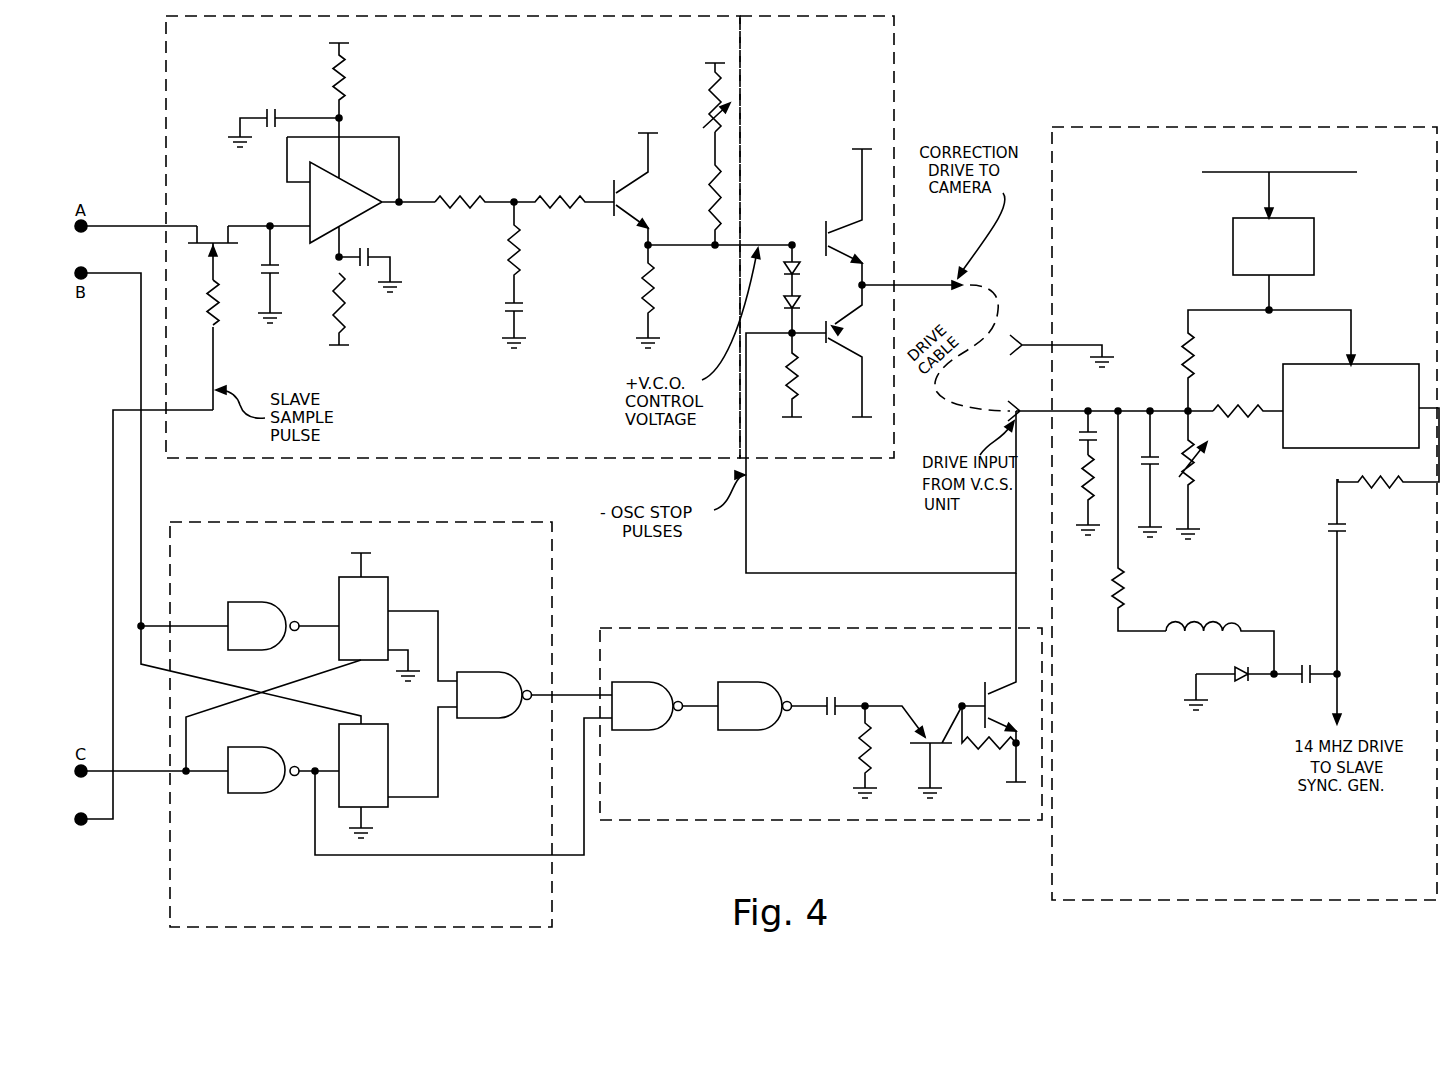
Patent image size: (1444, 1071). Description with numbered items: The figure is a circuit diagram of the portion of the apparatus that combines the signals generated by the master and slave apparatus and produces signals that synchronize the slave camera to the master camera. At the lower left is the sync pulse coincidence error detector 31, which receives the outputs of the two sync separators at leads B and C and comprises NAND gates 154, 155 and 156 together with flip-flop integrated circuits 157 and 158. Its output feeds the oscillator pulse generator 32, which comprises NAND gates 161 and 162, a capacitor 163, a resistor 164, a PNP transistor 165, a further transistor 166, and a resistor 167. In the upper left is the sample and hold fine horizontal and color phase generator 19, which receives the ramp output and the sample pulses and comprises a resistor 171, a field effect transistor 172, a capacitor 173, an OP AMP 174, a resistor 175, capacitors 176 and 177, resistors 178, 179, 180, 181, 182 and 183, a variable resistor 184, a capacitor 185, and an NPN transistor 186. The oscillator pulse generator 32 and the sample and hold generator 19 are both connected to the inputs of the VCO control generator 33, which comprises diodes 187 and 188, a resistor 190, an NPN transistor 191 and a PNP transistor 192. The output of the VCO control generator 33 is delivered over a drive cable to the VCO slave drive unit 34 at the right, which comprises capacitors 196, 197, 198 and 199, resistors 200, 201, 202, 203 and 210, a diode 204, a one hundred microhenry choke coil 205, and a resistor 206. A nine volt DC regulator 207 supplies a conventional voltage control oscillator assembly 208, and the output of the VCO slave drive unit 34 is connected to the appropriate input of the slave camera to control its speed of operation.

The sample and hold fine horizontal and color phase generator 19 is at (453, 252).
The sync pulse coincidence error detector 31 is at (379, 724).
The oscillator pulse generator 32 is at (821, 706).
The VCO control generator 33 is at (838, 237).
The VCO slave drive unit 34 is at (1244, 498).
The NAND gate 154 is at (283, 605).
The NAND gate 155 is at (278, 798).
The NAND gate 156 is at (518, 678).
The flip-flop integrated circuit 157 is at (392, 597).
The flip-flop integrated circuit 158 is at (393, 778).
The NAND gate 161 is at (653, 686).
The NAND gate 162 is at (767, 686).
The capacitor 163 is at (846, 692).
The resistor 164 is at (860, 755).
The PNP transistor 165 is at (942, 748).
The transistor 166 is at (982, 700).
The resistor 167 is at (995, 756).
The resistor 171 is at (217, 308).
The field effect transistor 172 is at (214, 226).
The capacitor 173 is at (272, 262).
The OP AMP 174 is at (372, 206).
The resistor 175 is at (343, 308).
The capacitor 176 is at (368, 252).
The capacitor 177 is at (271, 116).
The resistor 178 is at (347, 90).
The resistor 179 is at (474, 199).
The resistor 180 is at (528, 256).
The resistor 181 is at (562, 199).
The resistor 182 is at (646, 296).
The resistor 183 is at (712, 202).
The variable resistor 184 is at (712, 106).
The capacitor 185 is at (522, 303).
The NPN transistor 186 is at (620, 214).
The diode 187 is at (800, 268).
The diode 188 is at (802, 300).
The resistor 190 is at (797, 368).
The NPN transistor 191 is at (831, 224).
The PNP transistor 192 is at (840, 331).
The capacitor 196 is at (1095, 438).
The capacitor 197 is at (1158, 456).
The capacitor 198 is at (1312, 668).
The capacitor 199 is at (1344, 526).
The resistor 200 is at (1095, 503).
The resistor 201 is at (1126, 605).
The resistor 202 is at (1200, 478).
The resistor 203 is at (1252, 407).
The diode 204 is at (1236, 668).
The choke coil 205 is at (1192, 625).
The resistor 206 is at (1388, 448).
The 9 volt DC regulator 207 is at (1316, 264).
The voltage control oscillator assembly 208 is at (1418, 380).
The resistor 210 is at (1196, 362).